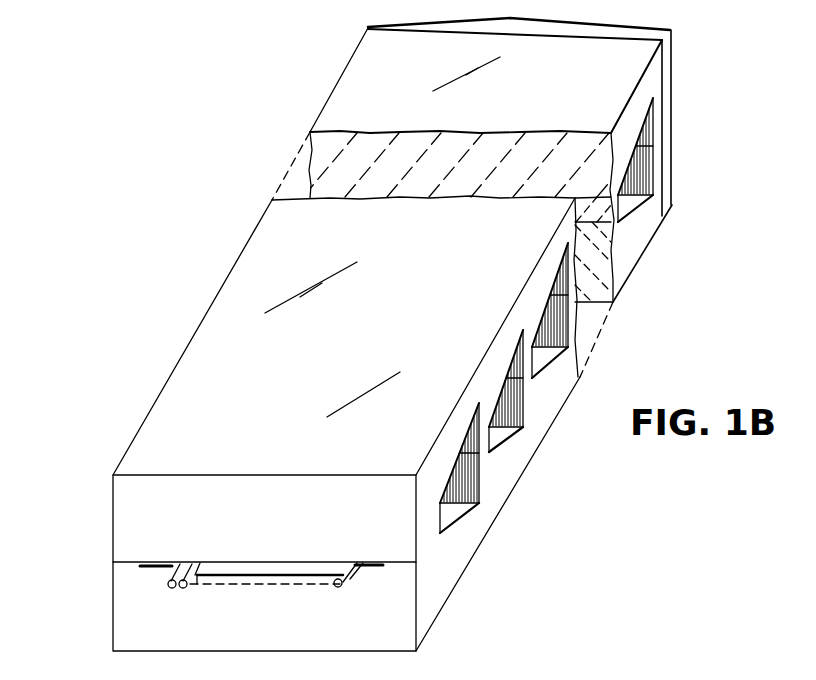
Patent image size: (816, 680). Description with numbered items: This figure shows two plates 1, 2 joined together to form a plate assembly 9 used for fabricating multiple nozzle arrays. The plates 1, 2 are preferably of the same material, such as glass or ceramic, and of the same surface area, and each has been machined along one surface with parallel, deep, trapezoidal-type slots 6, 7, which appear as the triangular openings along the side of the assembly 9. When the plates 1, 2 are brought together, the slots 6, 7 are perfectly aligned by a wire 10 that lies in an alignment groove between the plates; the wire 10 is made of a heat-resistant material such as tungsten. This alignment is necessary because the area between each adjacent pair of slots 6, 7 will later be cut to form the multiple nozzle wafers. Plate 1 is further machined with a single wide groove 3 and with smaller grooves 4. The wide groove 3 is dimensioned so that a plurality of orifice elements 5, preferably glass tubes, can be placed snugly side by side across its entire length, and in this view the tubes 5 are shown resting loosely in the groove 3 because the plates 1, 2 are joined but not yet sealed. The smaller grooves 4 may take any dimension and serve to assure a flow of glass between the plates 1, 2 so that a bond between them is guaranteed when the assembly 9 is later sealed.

The plate 1 is at (467, 553).
The plate 2 is at (130, 531).
The wide groove 3 is at (205, 578).
The smaller grooves 4 is at (143, 576).
The orifice elements 5 is at (176, 590).
The trapezoidal-type slot 6 is at (633, 168).
The trapezoidal-type slot 7 is at (653, 118).
The plate assembly 9 is at (676, 235).
The wire 10 is at (407, 32).